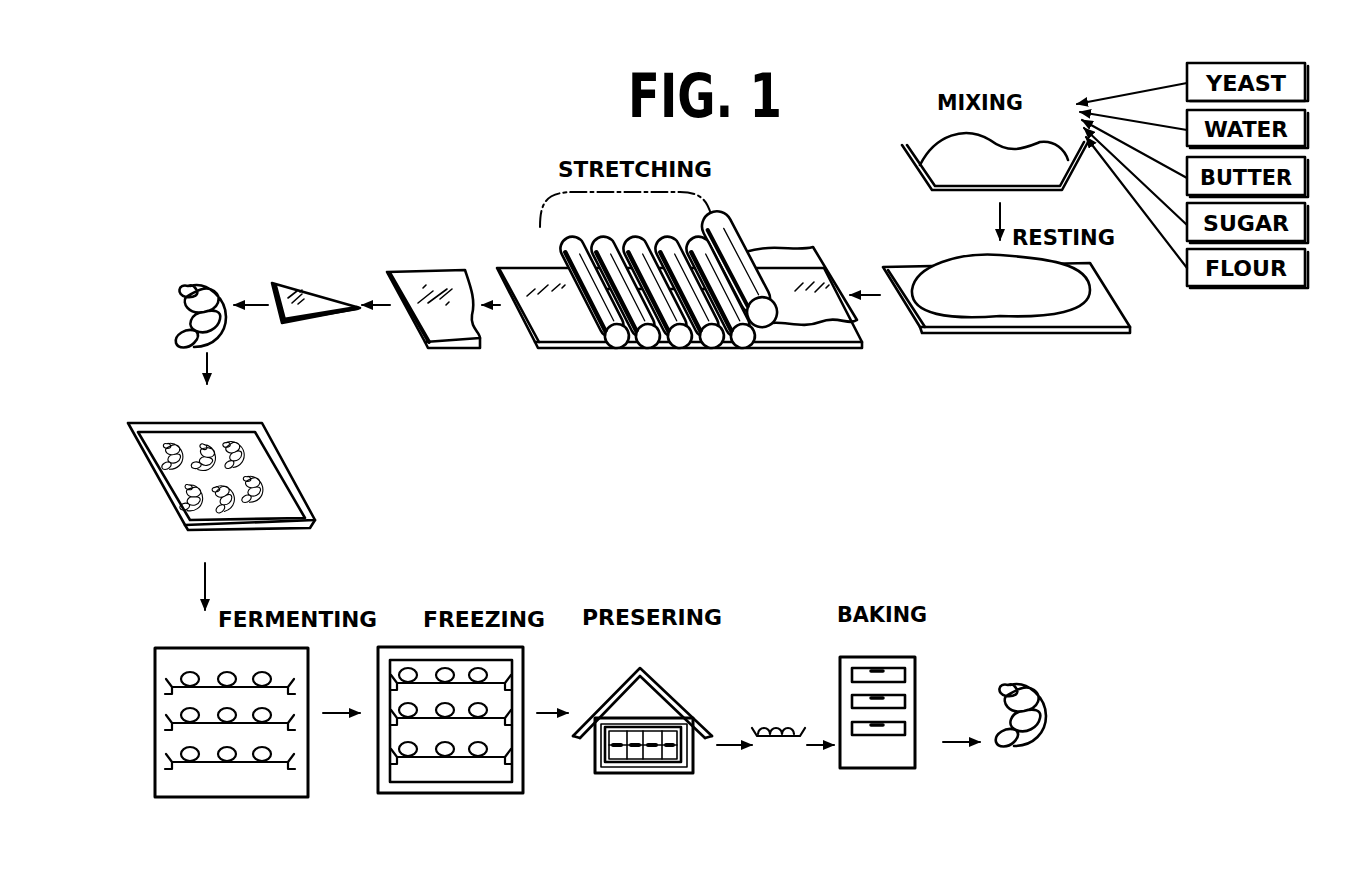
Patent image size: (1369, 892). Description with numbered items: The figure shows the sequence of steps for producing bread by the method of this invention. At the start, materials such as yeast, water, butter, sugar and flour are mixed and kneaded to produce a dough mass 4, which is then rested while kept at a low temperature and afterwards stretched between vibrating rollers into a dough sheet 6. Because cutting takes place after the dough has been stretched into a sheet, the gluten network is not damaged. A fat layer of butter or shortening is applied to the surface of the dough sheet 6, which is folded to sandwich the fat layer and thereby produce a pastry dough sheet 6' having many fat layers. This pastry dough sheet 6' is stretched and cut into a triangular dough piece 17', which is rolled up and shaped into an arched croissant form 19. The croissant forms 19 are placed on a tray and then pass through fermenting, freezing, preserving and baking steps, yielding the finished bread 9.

The dough mass 4 is at (943, 270).
The dough sheet 6 is at (679, 333).
The pastry dough sheet 6' is at (433, 336).
The triangular dough piece 17' is at (319, 328).
The arched croissant form 19 is at (225, 333).
The bread 9 is at (1033, 715).